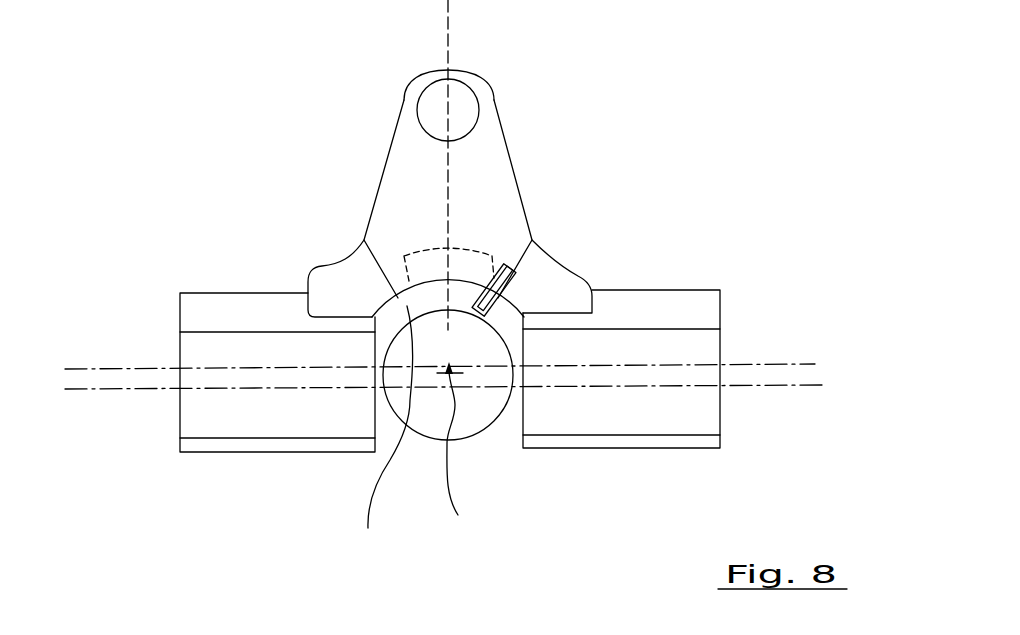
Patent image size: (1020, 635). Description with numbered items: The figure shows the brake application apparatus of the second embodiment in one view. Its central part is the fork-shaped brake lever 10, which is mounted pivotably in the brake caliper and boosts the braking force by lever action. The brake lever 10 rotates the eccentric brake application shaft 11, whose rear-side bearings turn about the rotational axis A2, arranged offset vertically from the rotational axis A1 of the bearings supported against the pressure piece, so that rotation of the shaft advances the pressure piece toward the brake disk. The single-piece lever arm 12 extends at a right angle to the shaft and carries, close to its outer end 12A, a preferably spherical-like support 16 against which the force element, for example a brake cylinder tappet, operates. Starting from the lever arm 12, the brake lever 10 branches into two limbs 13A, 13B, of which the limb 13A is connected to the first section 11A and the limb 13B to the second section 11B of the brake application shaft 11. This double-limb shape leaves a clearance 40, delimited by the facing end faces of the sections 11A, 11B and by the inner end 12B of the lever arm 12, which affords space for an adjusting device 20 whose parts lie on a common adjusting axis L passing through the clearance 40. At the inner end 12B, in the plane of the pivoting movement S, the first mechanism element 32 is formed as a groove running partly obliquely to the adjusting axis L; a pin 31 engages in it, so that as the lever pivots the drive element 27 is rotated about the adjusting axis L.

The brake lever 10 is at (393, 286).
The brake application shaft 11 is at (404, 416).
The first section of the brake application shaft 11A is at (222, 442).
The second section of the brake application shaft 11B is at (620, 440).
The lever arm 12 is at (393, 286).
The outer end of the lever arm 12A is at (487, 85).
The inner end of the lever arm 12B is at (438, 280).
The first limb 13A is at (340, 265).
The second limb 13B is at (547, 278).
The support 16 is at (464, 107).
The adjusting device 20 is at (493, 438).
The drive element 27 is at (496, 429).
The pin 31 is at (517, 272).
The first mechanism element 32 is at (452, 253).
The clearance 40 is at (385, 434).
The adjusting axis L is at (461, 451).
The pivoting movement S is at (445, 29).
The rotational axis A1 is at (800, 366).
The rotational axis A2 is at (774, 388).